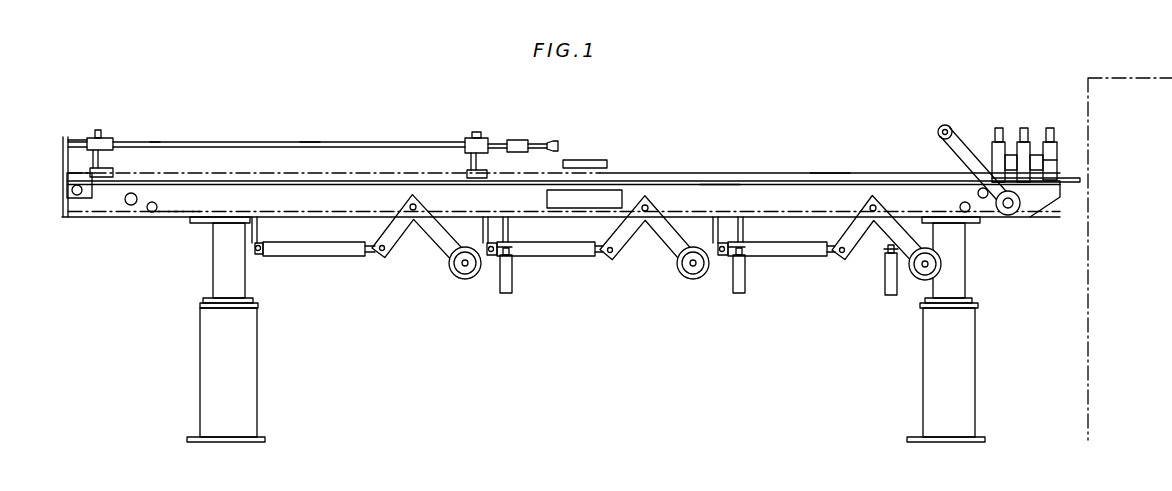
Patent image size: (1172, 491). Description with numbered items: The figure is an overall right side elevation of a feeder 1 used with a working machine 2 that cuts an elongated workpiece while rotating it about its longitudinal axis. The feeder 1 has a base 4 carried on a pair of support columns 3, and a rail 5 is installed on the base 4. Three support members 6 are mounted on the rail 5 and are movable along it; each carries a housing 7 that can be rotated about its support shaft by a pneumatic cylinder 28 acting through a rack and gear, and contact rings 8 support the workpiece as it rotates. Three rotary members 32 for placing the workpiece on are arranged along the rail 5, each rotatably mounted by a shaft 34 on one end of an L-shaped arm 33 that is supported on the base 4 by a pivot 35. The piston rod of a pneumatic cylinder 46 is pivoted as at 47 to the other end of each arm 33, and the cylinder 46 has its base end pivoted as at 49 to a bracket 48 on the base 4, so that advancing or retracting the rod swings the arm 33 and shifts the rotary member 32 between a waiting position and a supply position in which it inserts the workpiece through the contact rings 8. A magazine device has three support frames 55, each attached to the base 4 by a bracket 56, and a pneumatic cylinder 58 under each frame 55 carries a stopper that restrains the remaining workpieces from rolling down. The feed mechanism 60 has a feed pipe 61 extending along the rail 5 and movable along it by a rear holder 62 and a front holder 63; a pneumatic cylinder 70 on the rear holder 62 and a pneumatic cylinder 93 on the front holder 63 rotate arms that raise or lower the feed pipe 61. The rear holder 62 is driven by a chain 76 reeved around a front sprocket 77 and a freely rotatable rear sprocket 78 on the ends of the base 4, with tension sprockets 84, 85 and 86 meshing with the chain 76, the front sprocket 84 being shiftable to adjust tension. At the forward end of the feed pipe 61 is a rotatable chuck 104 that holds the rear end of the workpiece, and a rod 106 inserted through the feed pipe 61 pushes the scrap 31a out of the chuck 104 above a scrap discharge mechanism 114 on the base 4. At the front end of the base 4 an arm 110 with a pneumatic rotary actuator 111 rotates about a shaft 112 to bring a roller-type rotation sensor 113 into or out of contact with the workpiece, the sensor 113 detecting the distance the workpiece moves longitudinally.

The feeder 1 is at (775, 172).
The working machine 2 is at (1120, 74).
The support columns 3 is at (242, 370).
The base 4 is at (722, 186).
The rail 5 is at (830, 175).
The support members 6 is at (1000, 178).
The housing 7 is at (1052, 146).
The contact rings 8 is at (1010, 160).
The pneumatic cylinder 28 is at (1048, 128).
The scrap 31a is at (594, 161).
The rotary members 32 is at (465, 272).
The L-shaped arm 33 is at (400, 236).
The shaft 34 is at (462, 266).
The pivot 35 is at (410, 207).
The pneumatic cylinder 46 is at (326, 256).
The pivot 47 is at (382, 252).
The bracket 48 is at (256, 234).
The pivot 49 is at (257, 252).
The support frames 55 is at (512, 254).
The bracket 56 is at (508, 226).
The pneumatic cylinder 58 is at (509, 295).
The feed mechanism 60 is at (282, 131).
The feed pipe 61 is at (340, 142).
The rear holder 62 is at (113, 172).
The front holder 63 is at (478, 176).
The pneumatic cylinder 70 is at (101, 134).
The chain 76 is at (173, 208).
The front sprocket 77 is at (985, 198).
The rear sprocket 78 is at (77, 196).
The tension sprocket 84 is at (967, 212).
The tension sprocket 85 is at (152, 212).
The tension sprocket 86 is at (130, 205).
The pneumatic cylinder 93 is at (478, 134).
The chuck 104 is at (553, 141).
The rod 106 is at (80, 141).
The arm 110 is at (958, 140).
The pneumatic rotary actuator 111 is at (1012, 212).
The shaft 112 is at (1018, 203).
The rotation sensor 113 is at (942, 128).
The scrap discharge mechanism 114 is at (623, 194).